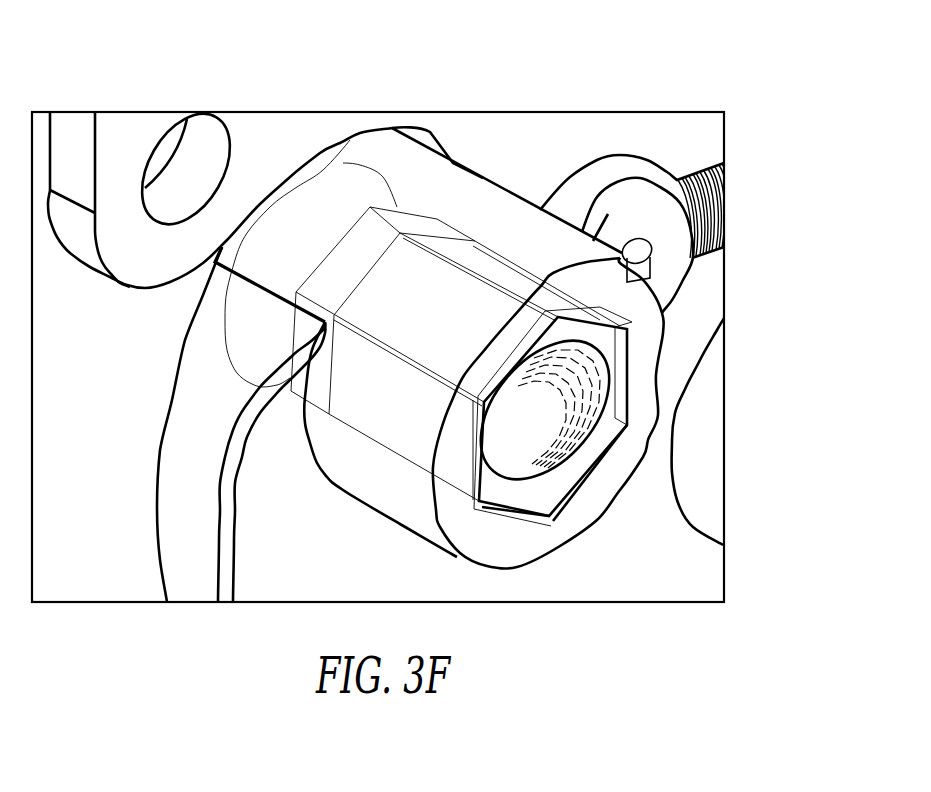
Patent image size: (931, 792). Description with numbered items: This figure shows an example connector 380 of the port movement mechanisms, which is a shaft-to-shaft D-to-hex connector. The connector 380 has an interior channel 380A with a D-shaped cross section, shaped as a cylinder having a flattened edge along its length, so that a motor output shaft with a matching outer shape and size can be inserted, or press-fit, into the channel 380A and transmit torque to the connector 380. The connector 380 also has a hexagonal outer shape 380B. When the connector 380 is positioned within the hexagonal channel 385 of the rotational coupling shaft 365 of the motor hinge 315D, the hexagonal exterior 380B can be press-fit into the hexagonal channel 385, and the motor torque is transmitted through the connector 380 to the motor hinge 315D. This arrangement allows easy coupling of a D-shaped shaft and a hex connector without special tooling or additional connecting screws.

The motor hinge 315D is at (262, 580).
The rotational coupling shaft 365 is at (507, 551).
The connector 380 is at (603, 335).
The interior channel 380A is at (545, 405).
The hexagonal outer shape 380B is at (497, 268).
The hexagonal channel 385 is at (597, 467).